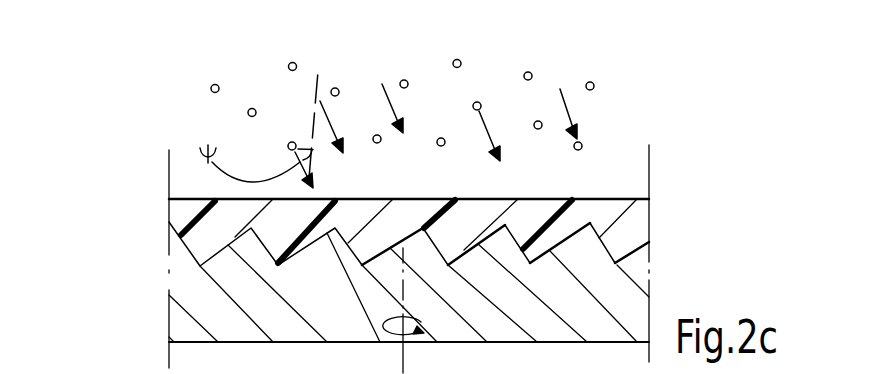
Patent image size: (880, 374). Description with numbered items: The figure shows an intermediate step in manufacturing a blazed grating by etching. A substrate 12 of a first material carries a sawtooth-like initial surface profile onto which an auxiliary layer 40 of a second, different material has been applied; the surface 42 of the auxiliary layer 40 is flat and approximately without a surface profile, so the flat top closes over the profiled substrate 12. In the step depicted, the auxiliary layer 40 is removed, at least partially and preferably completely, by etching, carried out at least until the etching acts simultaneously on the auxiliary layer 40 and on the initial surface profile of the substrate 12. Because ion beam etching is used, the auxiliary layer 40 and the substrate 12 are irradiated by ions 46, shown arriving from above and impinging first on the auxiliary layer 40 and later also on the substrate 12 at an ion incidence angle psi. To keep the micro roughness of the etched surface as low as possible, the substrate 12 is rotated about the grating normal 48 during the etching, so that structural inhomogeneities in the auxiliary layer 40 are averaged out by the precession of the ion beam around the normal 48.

The substrate 12 is at (203, 299).
The auxiliary layer 40 is at (205, 232).
The surface of the auxiliary layer 42 is at (603, 189).
The ions 46 is at (532, 73).
The grating normal 48 is at (404, 360).